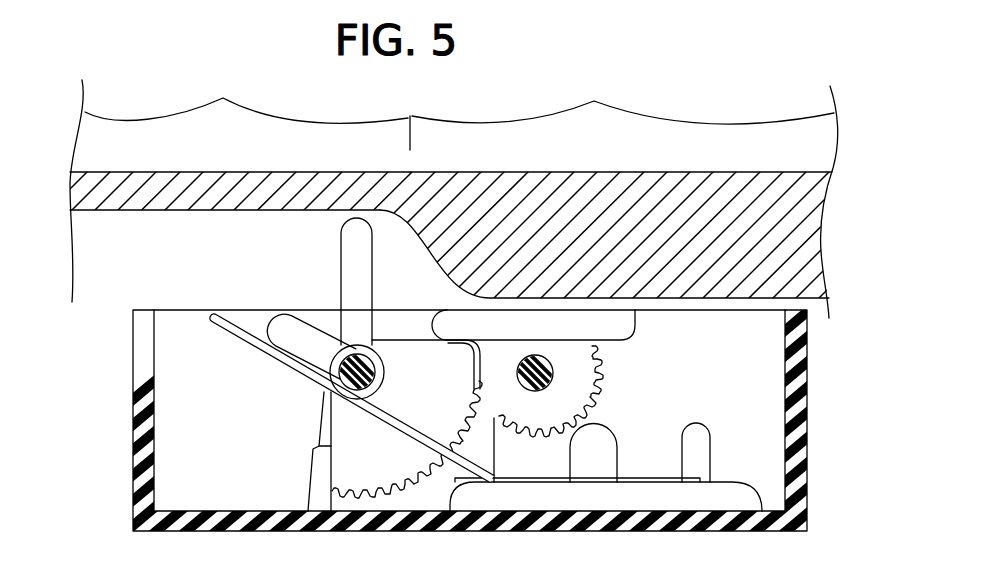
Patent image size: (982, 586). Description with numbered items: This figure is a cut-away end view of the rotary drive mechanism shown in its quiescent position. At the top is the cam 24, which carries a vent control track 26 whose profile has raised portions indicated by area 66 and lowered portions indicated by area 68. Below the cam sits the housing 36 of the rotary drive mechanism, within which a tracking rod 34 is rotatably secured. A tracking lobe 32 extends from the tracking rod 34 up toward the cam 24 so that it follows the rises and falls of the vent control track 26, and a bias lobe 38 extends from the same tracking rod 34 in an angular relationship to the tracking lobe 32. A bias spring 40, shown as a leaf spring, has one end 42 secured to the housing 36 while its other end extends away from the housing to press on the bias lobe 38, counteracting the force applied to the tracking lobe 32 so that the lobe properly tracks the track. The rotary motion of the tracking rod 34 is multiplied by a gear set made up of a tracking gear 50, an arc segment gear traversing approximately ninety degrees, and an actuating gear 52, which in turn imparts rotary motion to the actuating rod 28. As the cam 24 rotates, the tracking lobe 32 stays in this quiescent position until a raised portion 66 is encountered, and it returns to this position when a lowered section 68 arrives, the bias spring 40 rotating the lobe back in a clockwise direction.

The cam 24 is at (213, 170).
The vent control track 26 is at (819, 251).
The actuating rod 28 is at (553, 381).
The tracking lobe 32 is at (353, 238).
The tracking rod 34 is at (326, 385).
The housing 36 is at (803, 438).
The bias lobe 38 is at (292, 335).
The bias spring 40 is at (231, 332).
The end of leaf spring 42 is at (647, 478).
The tracking gear 50 is at (404, 400).
The actuating gear 52 is at (528, 347).
The raised portion 66 is at (623, 97).
The lowered portion 68 is at (247, 109).